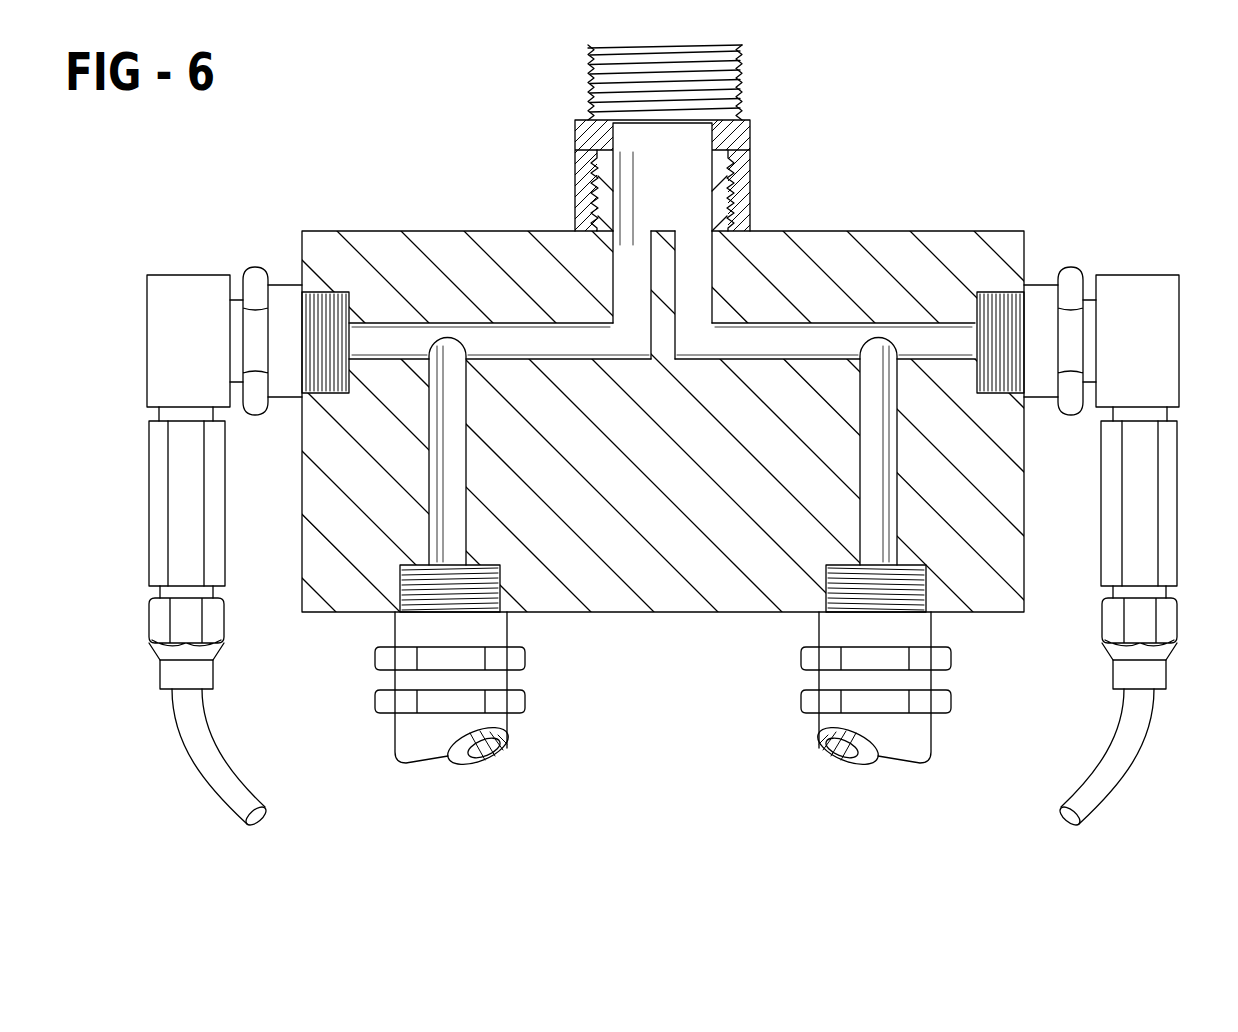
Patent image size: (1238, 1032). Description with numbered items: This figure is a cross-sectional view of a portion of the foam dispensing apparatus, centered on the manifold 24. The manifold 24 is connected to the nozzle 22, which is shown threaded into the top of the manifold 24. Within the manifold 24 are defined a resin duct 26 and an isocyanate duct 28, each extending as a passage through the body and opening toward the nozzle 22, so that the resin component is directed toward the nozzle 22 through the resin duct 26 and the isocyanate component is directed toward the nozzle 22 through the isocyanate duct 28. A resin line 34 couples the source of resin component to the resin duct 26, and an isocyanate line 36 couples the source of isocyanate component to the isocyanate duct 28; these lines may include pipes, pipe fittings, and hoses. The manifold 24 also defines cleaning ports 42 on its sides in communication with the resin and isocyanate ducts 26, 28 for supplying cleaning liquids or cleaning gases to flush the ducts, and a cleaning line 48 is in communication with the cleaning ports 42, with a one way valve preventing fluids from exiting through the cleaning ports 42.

The nozzle 22 is at (752, 143).
The manifold 24 is at (883, 242).
The resin duct 26 is at (450, 515).
The isocyanate duct 28 is at (875, 505).
The resin line 34 is at (412, 731).
The isocyanate line 36 is at (832, 729).
The cleaning ports 42 is at (375, 337).
The cleaning line 48 is at (200, 764).